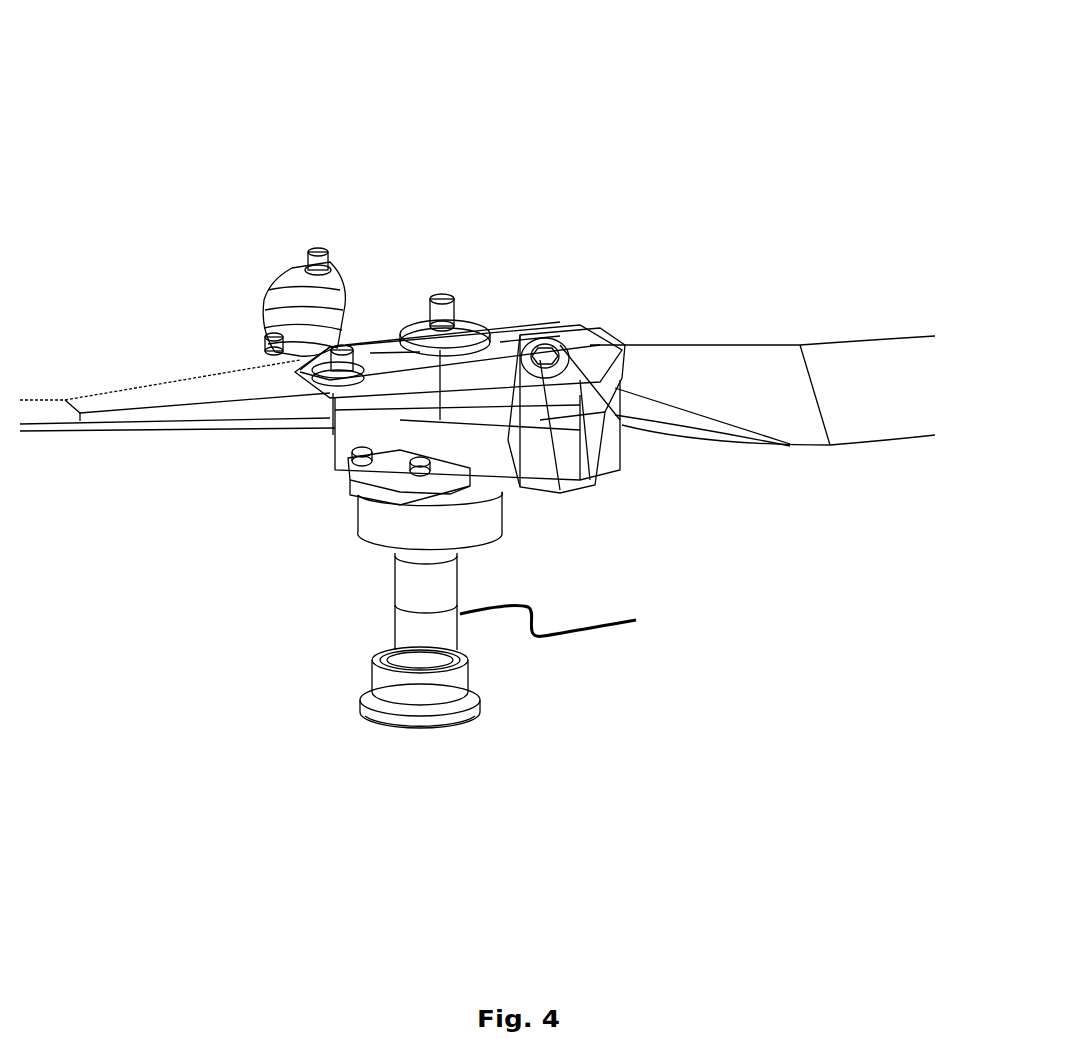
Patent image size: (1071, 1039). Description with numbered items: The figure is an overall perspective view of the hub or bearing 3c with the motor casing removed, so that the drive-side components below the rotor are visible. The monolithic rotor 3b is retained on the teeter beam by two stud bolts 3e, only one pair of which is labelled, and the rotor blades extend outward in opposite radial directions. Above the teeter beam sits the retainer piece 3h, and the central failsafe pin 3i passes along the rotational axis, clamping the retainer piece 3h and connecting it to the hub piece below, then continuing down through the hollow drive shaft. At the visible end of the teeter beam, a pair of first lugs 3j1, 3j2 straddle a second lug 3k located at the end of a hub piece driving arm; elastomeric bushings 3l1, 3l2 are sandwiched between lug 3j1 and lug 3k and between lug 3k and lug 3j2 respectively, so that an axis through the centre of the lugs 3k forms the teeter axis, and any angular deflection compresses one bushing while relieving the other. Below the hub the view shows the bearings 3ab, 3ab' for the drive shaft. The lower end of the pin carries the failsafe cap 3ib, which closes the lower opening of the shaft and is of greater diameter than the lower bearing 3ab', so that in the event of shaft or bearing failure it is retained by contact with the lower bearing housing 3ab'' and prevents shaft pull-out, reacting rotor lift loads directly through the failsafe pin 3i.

The bearing or hub 3c is at (477, 432).
The stud bolts 3e is at (343, 342).
The failsafe pin 3i is at (444, 300).
The retainer piece 3h is at (470, 327).
The monolithic rotor 3b is at (750, 296).
The first lug 3j1 is at (300, 264).
The elastomeric bushing 3l1 is at (292, 284).
The second lug 3k is at (282, 300).
The elastomeric bushing 3l2 is at (275, 318).
The first lug 3j2 is at (262, 339).
The bearing 3ab is at (531, 571).
The lower bearing 3ab' is at (529, 676).
The lower bearing housing 3ab'' is at (291, 672).
The failsafe cap 3ib is at (440, 725).